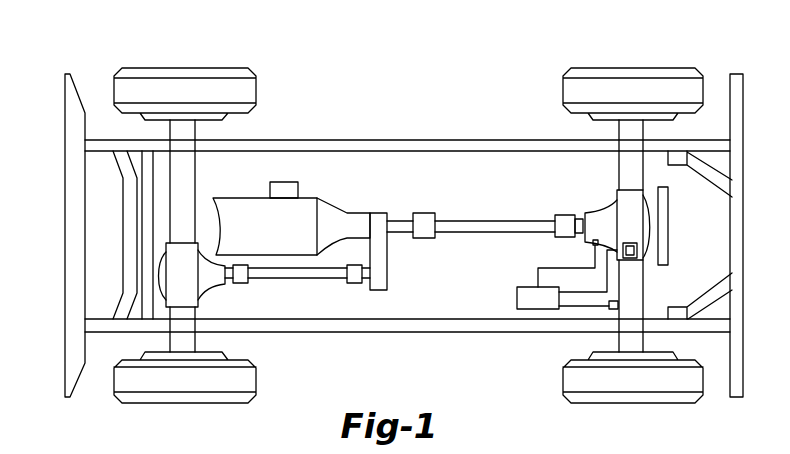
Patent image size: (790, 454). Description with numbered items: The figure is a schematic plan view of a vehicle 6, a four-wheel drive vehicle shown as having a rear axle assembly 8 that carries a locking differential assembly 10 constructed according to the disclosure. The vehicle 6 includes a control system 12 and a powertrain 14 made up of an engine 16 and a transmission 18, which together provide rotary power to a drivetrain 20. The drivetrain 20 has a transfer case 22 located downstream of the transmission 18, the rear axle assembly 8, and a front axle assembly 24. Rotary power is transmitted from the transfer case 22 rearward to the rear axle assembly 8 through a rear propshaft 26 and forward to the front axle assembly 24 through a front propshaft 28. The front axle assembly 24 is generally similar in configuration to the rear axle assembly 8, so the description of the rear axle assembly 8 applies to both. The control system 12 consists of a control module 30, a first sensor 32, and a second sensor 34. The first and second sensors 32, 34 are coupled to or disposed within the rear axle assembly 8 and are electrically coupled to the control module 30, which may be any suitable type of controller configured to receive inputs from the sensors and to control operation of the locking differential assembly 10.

The vehicle 6 is at (478, 39).
The rear axle assembly 8 is at (604, 178).
The locking differential assembly 10 is at (637, 228).
The control system 12 is at (510, 311).
The powertrain 14 is at (292, 180).
The engine 16 is at (243, 198).
The transmission 18 is at (338, 207).
The drivetrain 20 is at (463, 253).
The transfer case 22 is at (378, 213).
The front axle assembly 24 is at (206, 247).
The rear propshaft 26 is at (493, 220).
The front propshaft 28 is at (302, 282).
The control module 30 is at (523, 286).
The first sensor 32 is at (632, 260).
The second sensor 34 is at (612, 311).